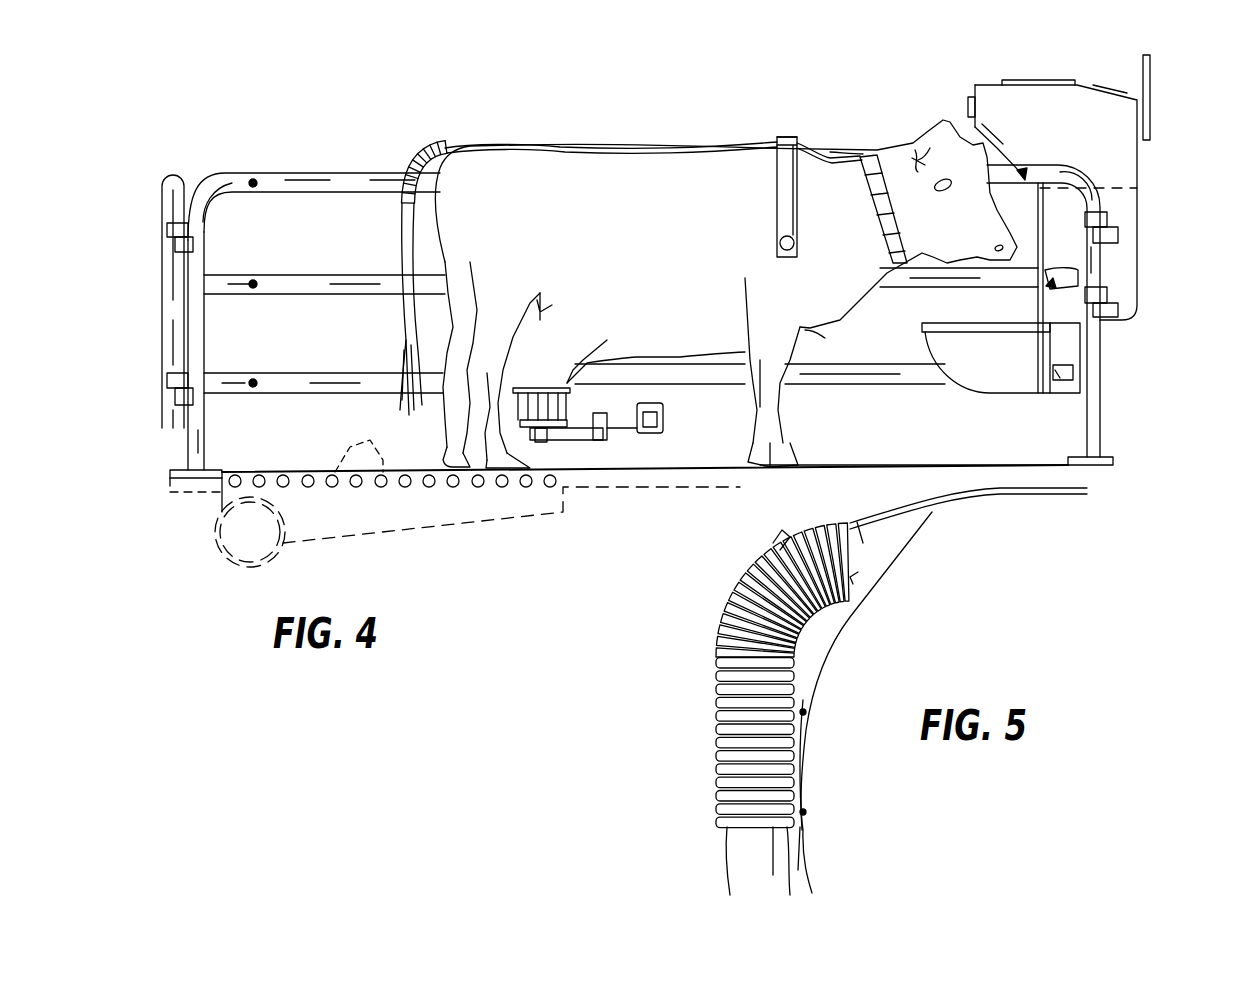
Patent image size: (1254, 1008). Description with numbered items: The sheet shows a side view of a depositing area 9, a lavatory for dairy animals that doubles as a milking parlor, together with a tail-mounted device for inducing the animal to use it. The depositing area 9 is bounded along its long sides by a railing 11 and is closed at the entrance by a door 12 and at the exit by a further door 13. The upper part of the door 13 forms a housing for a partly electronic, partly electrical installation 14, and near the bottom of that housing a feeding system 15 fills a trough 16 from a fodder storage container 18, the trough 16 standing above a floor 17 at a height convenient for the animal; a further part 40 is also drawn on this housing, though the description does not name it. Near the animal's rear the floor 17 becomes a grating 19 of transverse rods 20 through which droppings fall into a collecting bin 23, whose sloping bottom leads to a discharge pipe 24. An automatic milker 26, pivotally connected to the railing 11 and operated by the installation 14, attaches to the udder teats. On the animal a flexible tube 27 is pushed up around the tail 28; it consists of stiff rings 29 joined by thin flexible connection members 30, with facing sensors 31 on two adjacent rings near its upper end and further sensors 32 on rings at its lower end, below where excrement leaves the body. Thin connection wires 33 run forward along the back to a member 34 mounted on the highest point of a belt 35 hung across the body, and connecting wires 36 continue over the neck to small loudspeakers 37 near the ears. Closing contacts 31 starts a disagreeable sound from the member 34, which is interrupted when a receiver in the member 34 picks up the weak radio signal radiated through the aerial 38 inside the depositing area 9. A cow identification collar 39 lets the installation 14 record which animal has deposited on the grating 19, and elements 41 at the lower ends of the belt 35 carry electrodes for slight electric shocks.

In FIG. 4, the depositing area 9 is at (300, 173).
In FIG. 4, the railing 11 is at (302, 183).
In FIG. 4, the door 12 is at (160, 213).
In FIG. 4, the further door 13 is at (1156, 276).
In FIG. 4, the electrical installation 14 is at (1125, 155).
In FIG. 4, the feeding system 15 is at (1073, 342).
In FIG. 4, the trough 16 is at (943, 340).
In FIG. 4, the floor 17 is at (903, 437).
In FIG. 4, the fodder storage container 18 is at (1127, 204).
In FIG. 4, the grating 19 is at (307, 440).
In FIG. 4, the rods 20 is at (359, 448).
In FIG. 4, the collecting bin 23 is at (462, 510).
In FIG. 4, the discharge pipe 24 is at (287, 520).
In FIG. 4, the automatic milker 26 is at (590, 449).
In FIG. 4, the flexible tube 27 is at (412, 147).
In FIG. 5, the flexible tube 27 is at (747, 653).
In FIG. 4, the tail 28 is at (402, 245).
In FIG. 5, the tail 28 is at (872, 558).
In FIG. 5, the rings 29 is at (738, 582).
In FIG. 5, the connection members 30 is at (813, 523).
In FIG. 5, the sensors 31 is at (782, 530).
In FIG. 5, the sensors 32 is at (803, 712).
In FIG. 4, the connection wires 33 is at (587, 127).
In FIG. 5, the connection wires 33 is at (902, 503).
In FIG. 4, the member 34 is at (792, 140).
In FIG. 4, the belt 35 is at (782, 182).
In FIG. 4, the connecting wires 36 is at (830, 150).
In FIG. 4, the loudspeakers 37 is at (912, 175).
In FIG. 4, the aerial 38 is at (1153, 92).
In FIG. 4, the cow identification collar 39 is at (885, 237).
In FIG. 4, the flap 40 is at (985, 128).
In FIG. 4, the element 41 is at (777, 243).